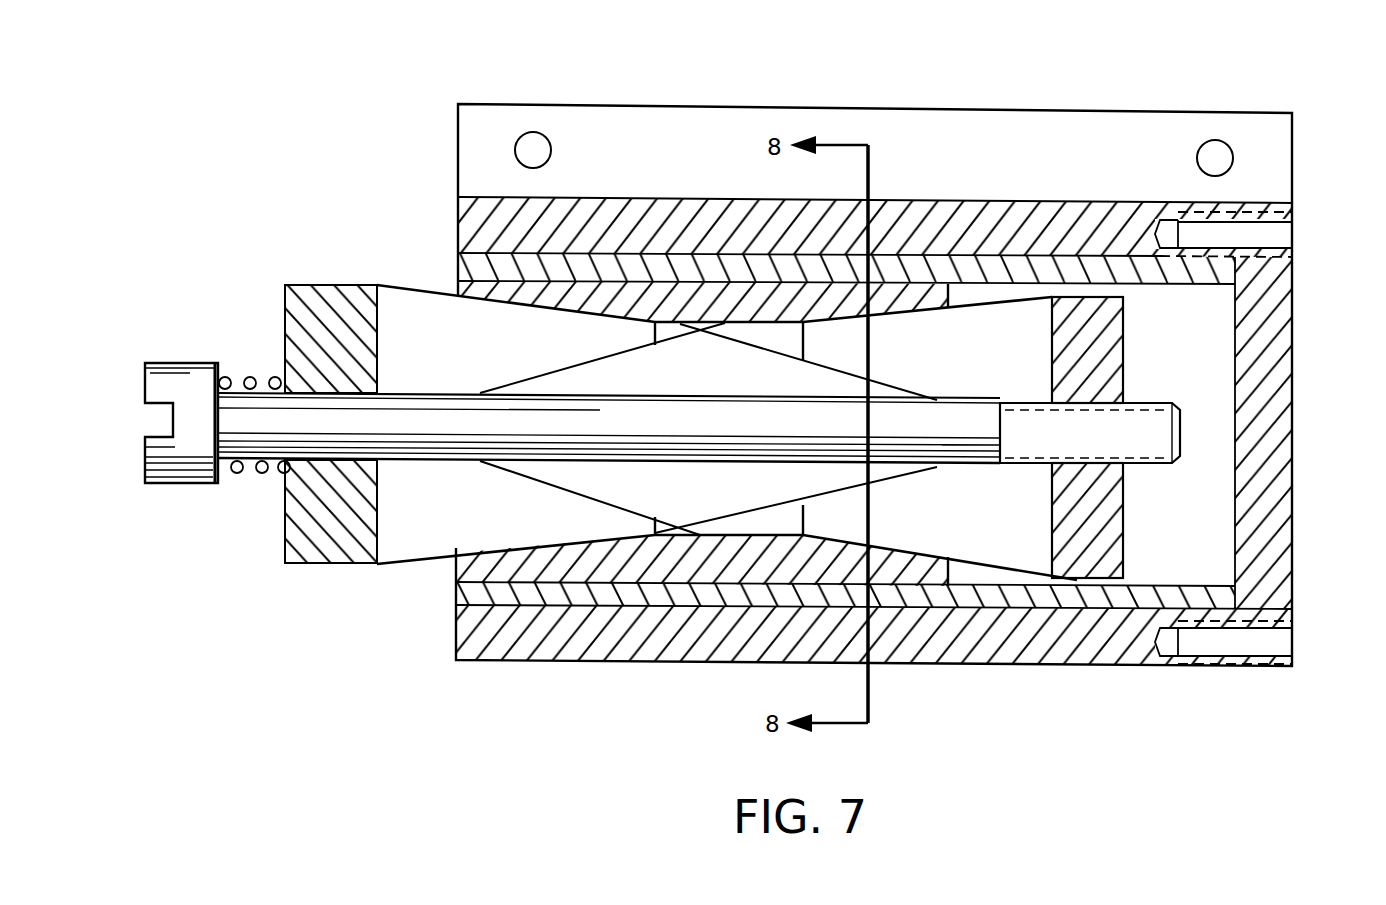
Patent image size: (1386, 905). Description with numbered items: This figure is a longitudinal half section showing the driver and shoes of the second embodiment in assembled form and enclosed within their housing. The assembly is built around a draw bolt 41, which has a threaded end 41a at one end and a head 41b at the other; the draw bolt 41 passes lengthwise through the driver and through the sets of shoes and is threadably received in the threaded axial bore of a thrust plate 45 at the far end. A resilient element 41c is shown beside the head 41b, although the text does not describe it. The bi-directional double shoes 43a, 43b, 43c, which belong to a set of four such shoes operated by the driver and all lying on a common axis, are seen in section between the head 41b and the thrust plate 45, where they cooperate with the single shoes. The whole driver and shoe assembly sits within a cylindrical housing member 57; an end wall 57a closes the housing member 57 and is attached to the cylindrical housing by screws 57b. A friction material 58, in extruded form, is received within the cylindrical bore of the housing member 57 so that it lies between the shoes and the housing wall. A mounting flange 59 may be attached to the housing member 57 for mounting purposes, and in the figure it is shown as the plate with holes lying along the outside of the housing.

The draw bolt 41 is at (887, 395).
The threaded end 41a is at (1157, 465).
The head 41b is at (165, 362).
The spring 41c is at (250, 380).
The bi-directional shoe 43a is at (688, 290).
The bi-directional shoe 43b is at (733, 515).
The bi-directional shoe 43c is at (665, 577).
The thrust plate 45 is at (1077, 582).
The housing member 57 is at (912, 665).
The end wall 57a is at (1291, 607).
The screws 57b is at (1293, 232).
The friction material 58 is at (972, 612).
The mounting flange 59 is at (1233, 120).